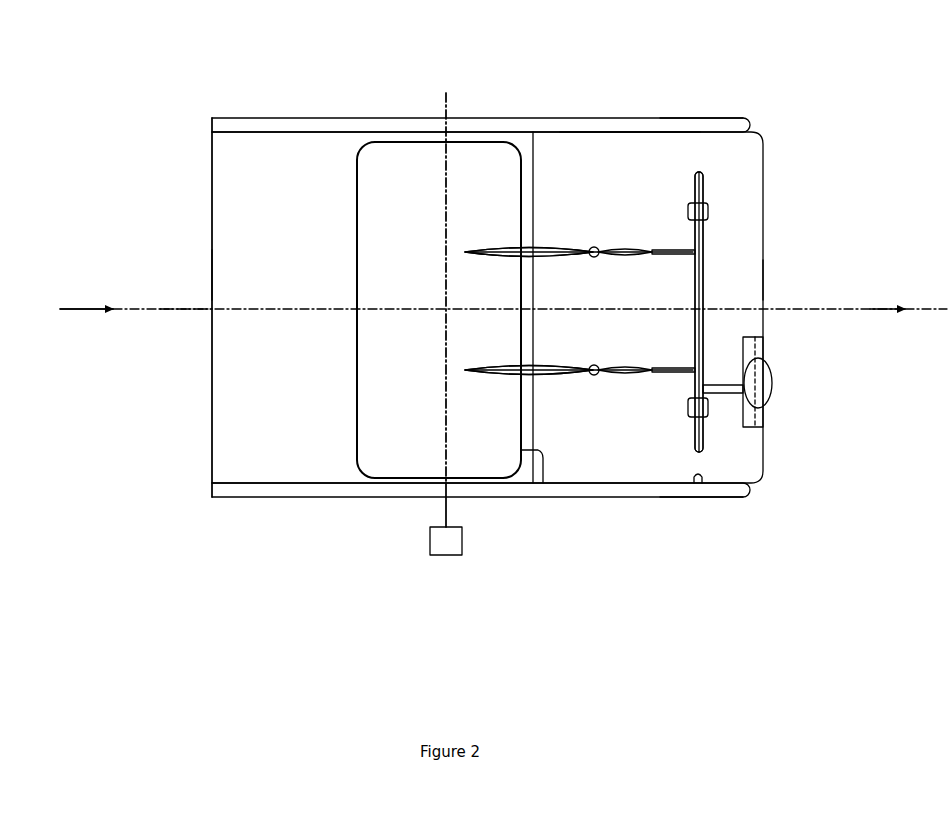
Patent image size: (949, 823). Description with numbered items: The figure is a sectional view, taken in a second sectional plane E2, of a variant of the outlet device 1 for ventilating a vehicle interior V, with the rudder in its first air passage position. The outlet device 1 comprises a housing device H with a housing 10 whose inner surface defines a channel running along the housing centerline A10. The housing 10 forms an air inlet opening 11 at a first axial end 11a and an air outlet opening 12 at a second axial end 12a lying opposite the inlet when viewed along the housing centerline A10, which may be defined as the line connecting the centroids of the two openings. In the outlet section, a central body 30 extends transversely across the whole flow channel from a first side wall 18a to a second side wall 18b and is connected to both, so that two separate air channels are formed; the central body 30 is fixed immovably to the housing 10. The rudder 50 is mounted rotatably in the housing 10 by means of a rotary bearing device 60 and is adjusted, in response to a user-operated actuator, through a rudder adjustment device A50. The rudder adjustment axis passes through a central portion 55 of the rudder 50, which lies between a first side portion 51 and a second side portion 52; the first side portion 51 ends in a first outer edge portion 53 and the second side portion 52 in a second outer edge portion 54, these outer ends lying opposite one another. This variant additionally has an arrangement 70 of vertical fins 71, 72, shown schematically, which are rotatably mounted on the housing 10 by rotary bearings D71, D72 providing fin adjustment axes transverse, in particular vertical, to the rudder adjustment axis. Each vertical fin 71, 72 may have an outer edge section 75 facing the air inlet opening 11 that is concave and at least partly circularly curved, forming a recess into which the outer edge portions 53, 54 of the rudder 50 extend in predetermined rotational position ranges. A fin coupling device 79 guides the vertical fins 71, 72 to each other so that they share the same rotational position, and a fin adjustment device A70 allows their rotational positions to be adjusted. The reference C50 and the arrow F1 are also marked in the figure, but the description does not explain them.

The outlet device 1 is at (383, 85).
The housing 10 is at (572, 118).
The air inlet opening 11 is at (137, 175).
The first axial end 11a is at (215, 272).
The air outlet opening 12 is at (775, 265).
The second axial end 12a is at (770, 285).
The first side wall 18a is at (703, 487).
The second side wall 18b is at (722, 140).
The central body 30 is at (628, 143).
The rudder 50 is at (345, 380).
The first side portion 51 is at (360, 190).
The second side portion 52 is at (507, 189).
The first outer edge portion 53 is at (350, 435).
The second outer edge portion 54 is at (541, 485).
The central portion 55 is at (437, 205).
The rotary bearing device 60 is at (458, 140).
The arrangement of vertical fins 70 is at (600, 195).
The vertical fin 71 is at (615, 375).
The vertical fin 72 is at (612, 256).
The outer edge section 75 is at (497, 268).
The fin coupling device 79 is at (680, 172).
The housing centerline A10 is at (160, 310).
The rudder adjustment device A50 is at (435, 555).
The fin adjustment device A70 is at (678, 460).
The center of cabin C50 is at (447, 437).
The rotary bearing D71 is at (598, 368).
The rotary bearing D72 is at (598, 250).
The second sectional plane E2 is at (197, 312).
The direction of flight F1 is at (110, 312).
The housing device H is at (455, 105).
The vehicle interior V is at (883, 171).